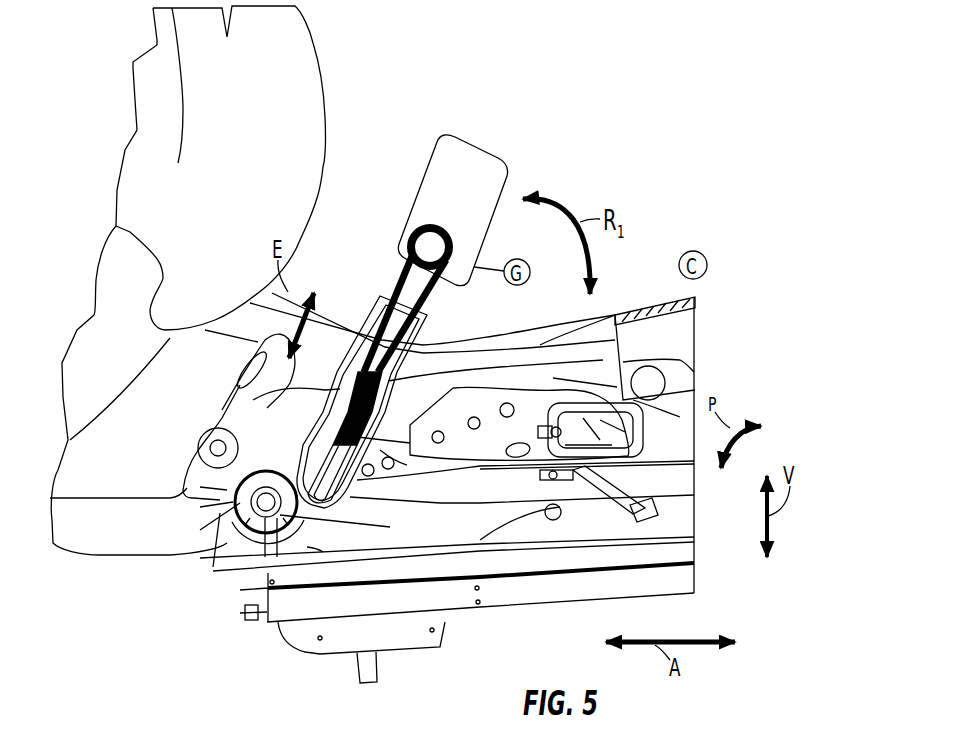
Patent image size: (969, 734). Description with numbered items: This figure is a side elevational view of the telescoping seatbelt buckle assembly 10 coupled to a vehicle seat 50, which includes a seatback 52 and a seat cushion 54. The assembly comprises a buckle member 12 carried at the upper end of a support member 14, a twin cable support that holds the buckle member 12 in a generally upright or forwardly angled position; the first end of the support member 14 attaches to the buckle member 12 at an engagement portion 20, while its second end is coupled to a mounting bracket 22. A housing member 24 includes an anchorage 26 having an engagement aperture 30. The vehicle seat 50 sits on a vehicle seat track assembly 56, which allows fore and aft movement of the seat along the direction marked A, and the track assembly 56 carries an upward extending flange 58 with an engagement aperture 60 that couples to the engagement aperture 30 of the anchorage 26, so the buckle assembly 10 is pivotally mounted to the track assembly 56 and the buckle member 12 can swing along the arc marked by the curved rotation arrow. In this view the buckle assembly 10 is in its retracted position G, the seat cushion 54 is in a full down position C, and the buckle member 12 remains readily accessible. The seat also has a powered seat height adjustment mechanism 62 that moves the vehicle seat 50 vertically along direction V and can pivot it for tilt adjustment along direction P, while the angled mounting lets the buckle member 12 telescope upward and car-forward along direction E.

The telescoping seatbelt buckle assembly 10 is at (473, 181).
The buckle member 12 is at (427, 134).
The support member 14 is at (373, 328).
The engagement portion 20 is at (427, 250).
The mounting bracket 22 is at (472, 416).
The housing member 24 is at (345, 362).
The anchorage 26 is at (273, 545).
The engagement aperture 30 is at (266, 493).
The vehicle seat 50 is at (247, 168).
The seatback 52 is at (310, 40).
The seat cushion 54 is at (607, 314).
The vehicle seat track assembly 56 is at (632, 587).
The upward extending flange 58 is at (237, 540).
The engagement aperture 60 is at (232, 503).
The powered seat height adjustment mechanism 62 is at (647, 481).